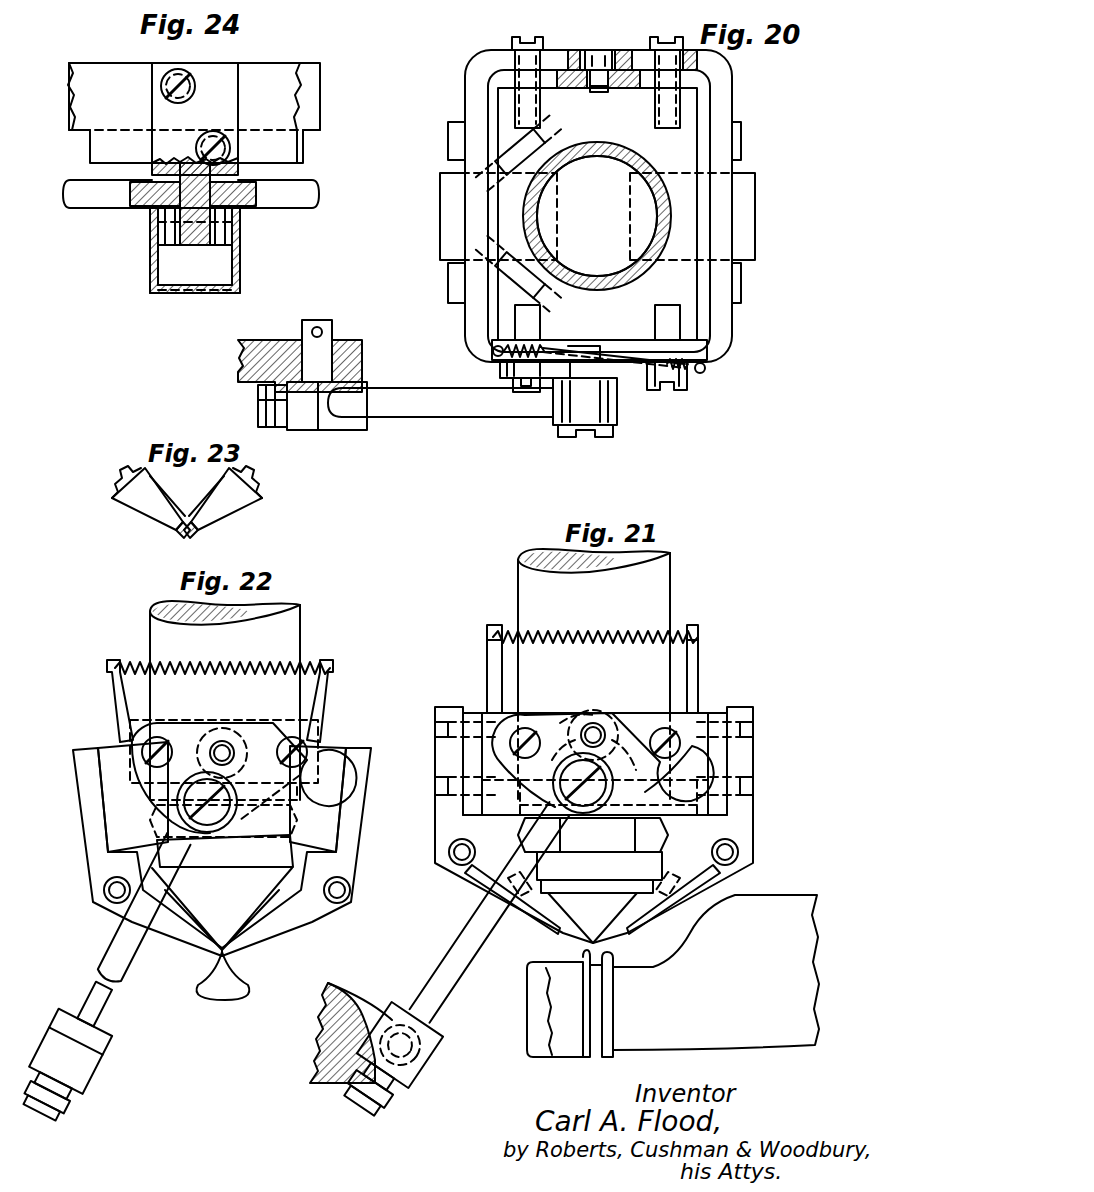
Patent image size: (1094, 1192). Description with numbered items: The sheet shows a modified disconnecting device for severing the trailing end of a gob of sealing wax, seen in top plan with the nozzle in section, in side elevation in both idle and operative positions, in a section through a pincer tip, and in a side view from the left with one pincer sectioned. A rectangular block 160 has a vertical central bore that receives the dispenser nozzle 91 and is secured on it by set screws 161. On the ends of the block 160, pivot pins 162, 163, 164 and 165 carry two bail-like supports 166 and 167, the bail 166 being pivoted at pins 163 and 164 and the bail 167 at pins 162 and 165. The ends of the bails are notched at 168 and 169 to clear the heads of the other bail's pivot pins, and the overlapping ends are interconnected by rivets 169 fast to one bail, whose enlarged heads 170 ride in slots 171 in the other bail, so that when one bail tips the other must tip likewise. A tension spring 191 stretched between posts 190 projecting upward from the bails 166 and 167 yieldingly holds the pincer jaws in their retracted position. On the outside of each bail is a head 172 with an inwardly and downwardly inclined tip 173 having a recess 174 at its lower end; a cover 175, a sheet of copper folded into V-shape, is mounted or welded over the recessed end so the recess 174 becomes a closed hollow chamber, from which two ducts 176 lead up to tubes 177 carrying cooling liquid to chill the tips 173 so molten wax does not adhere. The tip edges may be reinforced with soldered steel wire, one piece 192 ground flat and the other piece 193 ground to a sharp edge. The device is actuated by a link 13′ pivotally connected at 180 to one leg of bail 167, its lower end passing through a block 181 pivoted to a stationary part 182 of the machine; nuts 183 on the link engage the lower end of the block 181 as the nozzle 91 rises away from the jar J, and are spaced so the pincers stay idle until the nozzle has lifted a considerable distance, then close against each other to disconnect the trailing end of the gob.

In FIG. 20, the link 13′ is at (440, 402).
In FIG. 22, the link 13′ is at (125, 953).
In FIG. 21, the link 13′ is at (455, 963).
In FIG. 20, the nozzle 91 is at (597, 216).
In FIG. 22, the nozzle 91 is at (296, 626).
In FIG. 21, the nozzle 91 is at (661, 586).
In FIG. 24, the rectangular block 160 is at (307, 83).
In FIG. 20, the rectangular block 160 is at (590, 303).
In FIG. 22, the rectangular block 160 is at (222, 718).
In FIG. 21, the rectangular block 160 is at (599, 781).
In FIG. 20, the set screws 161 is at (531, 160).
In FIG. 20, the pivot pin 162 is at (518, 37).
In FIG. 20, the pivot pin 163 is at (673, 40).
In FIG. 20, the pivot pin 164 is at (688, 389).
In FIG. 22, the pivot pin 164 is at (313, 760).
In FIG. 21, the pivot pin 164 is at (672, 742).
In FIG. 20, the pivot pin 165 is at (502, 380).
In FIG. 22, the pivot pin 165 is at (157, 745).
In FIG. 21, the pivot pin 165 is at (515, 740).
In FIG. 24, the bail-like support 166 is at (283, 72).
In FIG. 20, the bail-like support 166 is at (480, 58).
In FIG. 22, the bail-like support 166 is at (133, 797).
In FIG. 21, the bail-like support 166 is at (501, 764).
In FIG. 20, the bail-like support 167 is at (718, 104).
In FIG. 22, the bail-like support 167 is at (332, 818).
In FIG. 21, the bail-like support 167 is at (702, 788).
In FIG. 22, the notch 168 is at (190, 740).
In FIG. 21, the notch 168 is at (555, 722).
In FIG. 20, the rivet 169 is at (602, 87).
In FIG. 22, the rivet 169 is at (293, 745).
In FIG. 21, the rivet 169 is at (668, 744).
In FIG. 20, the enlarged head 170 is at (600, 52).
In FIG. 21, the enlarged head 170 is at (589, 755).
In FIG. 20, the slot 171 is at (572, 52).
In FIG. 21, the slot 171 is at (610, 730).
In FIG. 24, the head 172 is at (222, 63).
In FIG. 20, the head 172 is at (450, 236).
In FIG. 22, the head 172 is at (86, 751).
In FIG. 21, the head 172 is at (754, 831).
In FIG. 24, the tip 173 is at (240, 264).
In FIG. 21, the tip 173 is at (742, 877).
In FIG. 24, the recess 174 is at (170, 278).
In FIG. 24, the cover 175 is at (176, 293).
In FIG. 23, the cover 175 is at (218, 490).
In FIG. 22, the cover 175 is at (176, 940).
In FIG. 21, the cover 175 is at (645, 920).
In FIG. 24, the ducts 176 is at (172, 240).
In FIG. 21, the ducts 176 is at (490, 888).
In FIG. 24, the tubes 177 is at (191, 204).
In FIG. 20, the tubes 177 is at (456, 148).
In FIG. 22, the tubes 177 is at (104, 890).
In FIG. 21, the tubes 177 is at (450, 853).
In FIG. 20, the pivotal connection 180 is at (618, 432).
In FIG. 22, the pivotal connection 180 is at (223, 836).
In FIG. 21, the pivotal connection 180 is at (593, 835).
In FIG. 20, the block 181 is at (343, 431).
In FIG. 22, the block 181 is at (100, 1067).
In FIG. 21, the block 181 is at (444, 1037).
In FIG. 20, the stationary part 182 is at (292, 345).
In FIG. 21, the stationary part 182 is at (345, 1008).
In FIG. 20, the nuts 183 is at (262, 396).
In FIG. 22, the nuts 183 is at (66, 1124).
In FIG. 21, the nuts 183 is at (398, 1114).
In FIG. 20, the posts 190 is at (490, 350).
In FIG. 22, the posts 190 is at (115, 693).
In FIG. 21, the posts 190 is at (493, 673).
In FIG. 20, the tension spring 191 is at (547, 351).
In FIG. 22, the tension spring 191 is at (245, 665).
In FIG. 21, the tension spring 191 is at (629, 636).
In FIG. 23, the steel wire piece 192 is at (180, 531).
In FIG. 23, the steel wire piece 193 is at (194, 531).
In FIG. 21, the jar J is at (673, 976).